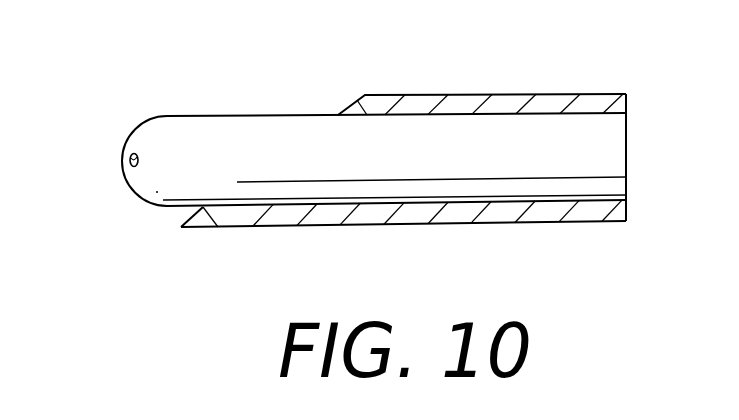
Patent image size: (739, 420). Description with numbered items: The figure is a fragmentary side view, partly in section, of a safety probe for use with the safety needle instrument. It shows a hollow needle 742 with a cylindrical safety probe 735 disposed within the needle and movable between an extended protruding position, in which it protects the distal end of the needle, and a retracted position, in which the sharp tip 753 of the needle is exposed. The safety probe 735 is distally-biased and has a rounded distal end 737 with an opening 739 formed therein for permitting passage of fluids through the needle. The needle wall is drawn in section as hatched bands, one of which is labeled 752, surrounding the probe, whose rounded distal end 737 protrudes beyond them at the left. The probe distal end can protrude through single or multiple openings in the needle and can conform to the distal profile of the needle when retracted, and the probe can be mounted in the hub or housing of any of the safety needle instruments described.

The safety probe 735 is at (229, 104).
The rounded distal end 737 is at (137, 130).
The opening 739 is at (131, 181).
The hollow needle 742 is at (531, 83).
The upper conductive band 752 is at (365, 95).
The sharp tip 753 is at (181, 227).